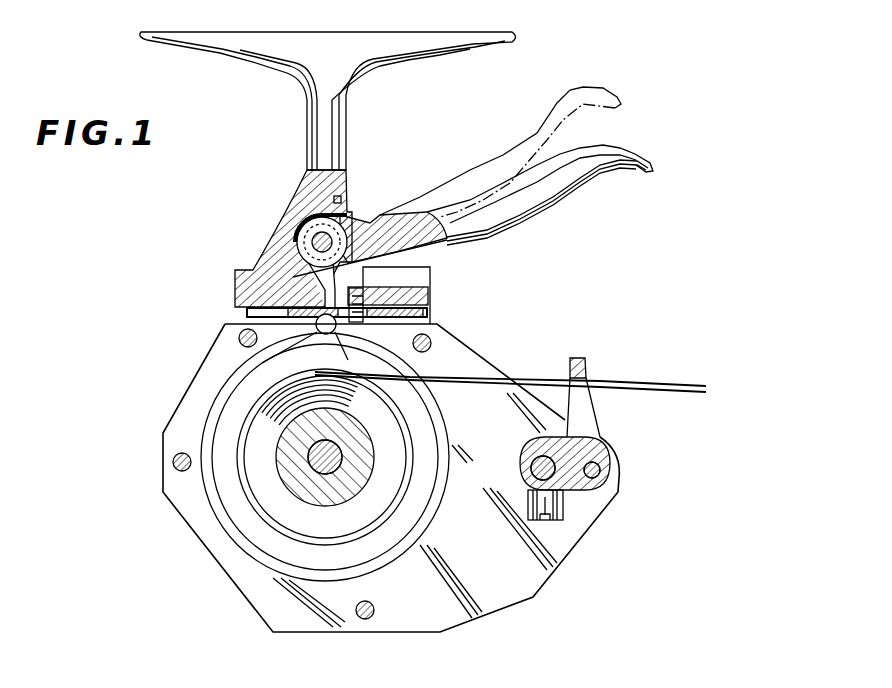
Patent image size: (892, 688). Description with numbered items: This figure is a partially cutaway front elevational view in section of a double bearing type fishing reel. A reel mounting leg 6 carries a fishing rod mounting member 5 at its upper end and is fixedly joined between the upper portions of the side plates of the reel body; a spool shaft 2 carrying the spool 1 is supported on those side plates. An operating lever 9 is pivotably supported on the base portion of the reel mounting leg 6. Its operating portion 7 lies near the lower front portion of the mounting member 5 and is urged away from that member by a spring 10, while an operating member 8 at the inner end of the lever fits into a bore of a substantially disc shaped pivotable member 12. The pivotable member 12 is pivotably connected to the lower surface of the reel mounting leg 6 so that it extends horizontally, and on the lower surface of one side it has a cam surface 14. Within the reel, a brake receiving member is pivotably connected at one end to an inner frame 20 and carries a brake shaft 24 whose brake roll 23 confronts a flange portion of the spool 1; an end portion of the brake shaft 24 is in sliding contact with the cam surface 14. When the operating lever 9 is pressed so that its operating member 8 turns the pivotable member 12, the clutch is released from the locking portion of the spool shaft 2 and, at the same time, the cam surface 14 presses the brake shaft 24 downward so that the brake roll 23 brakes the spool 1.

The spool 1 is at (422, 428).
The spool shaft 2 is at (340, 462).
The fishing rod mounting member 5 is at (258, 48).
The reel mounting leg 6 is at (320, 120).
The operating portion 7 is at (620, 157).
The operating member 8 is at (326, 296).
The operating lever 9 is at (511, 233).
The spring 10 is at (318, 213).
The pivotable member 12 is at (420, 312).
The cam surface 14 is at (283, 316).
The inner frame 20 is at (192, 395).
The brake roll 23 is at (400, 370).
The brake shaft 24 is at (319, 333).